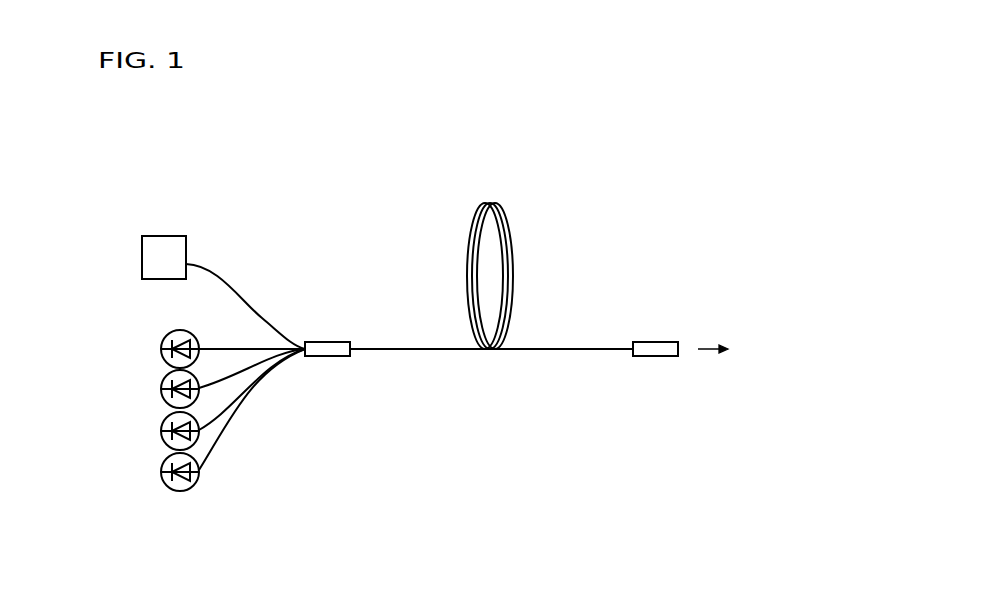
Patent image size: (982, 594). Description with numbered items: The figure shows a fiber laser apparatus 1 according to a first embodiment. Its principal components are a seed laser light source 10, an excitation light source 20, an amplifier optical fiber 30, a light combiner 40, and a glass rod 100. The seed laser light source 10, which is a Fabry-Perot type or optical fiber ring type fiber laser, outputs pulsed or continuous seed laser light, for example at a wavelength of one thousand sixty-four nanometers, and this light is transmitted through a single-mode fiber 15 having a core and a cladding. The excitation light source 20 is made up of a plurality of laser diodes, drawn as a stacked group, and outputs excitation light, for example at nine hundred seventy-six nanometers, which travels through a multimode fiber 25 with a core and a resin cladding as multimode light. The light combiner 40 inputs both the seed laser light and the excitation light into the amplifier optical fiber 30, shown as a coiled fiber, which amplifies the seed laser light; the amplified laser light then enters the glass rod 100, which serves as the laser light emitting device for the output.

The fiber laser apparatus 1 is at (700, 218).
The seed laser light source 10 is at (162, 253).
The single-mode fiber 15 is at (237, 298).
The excitation light source 20 is at (156, 326).
The multimode fiber 25 is at (218, 460).
The amplifier optical fiber 30 is at (510, 349).
The light combiner 40 is at (340, 357).
The glass rod 100 is at (647, 348).